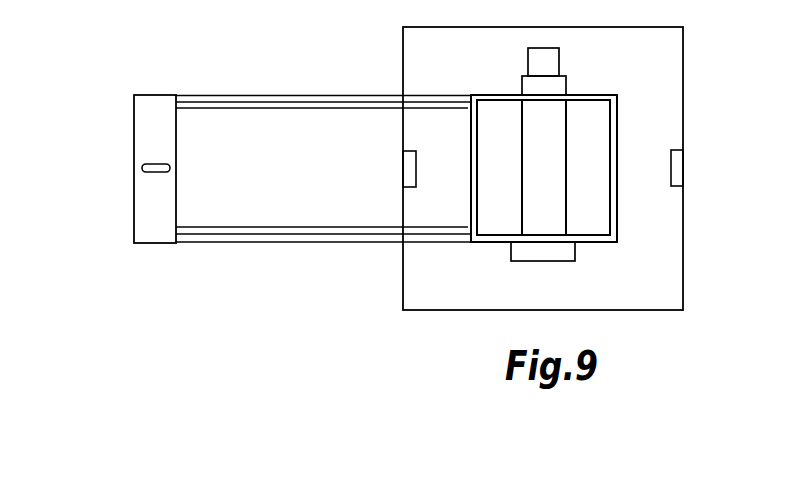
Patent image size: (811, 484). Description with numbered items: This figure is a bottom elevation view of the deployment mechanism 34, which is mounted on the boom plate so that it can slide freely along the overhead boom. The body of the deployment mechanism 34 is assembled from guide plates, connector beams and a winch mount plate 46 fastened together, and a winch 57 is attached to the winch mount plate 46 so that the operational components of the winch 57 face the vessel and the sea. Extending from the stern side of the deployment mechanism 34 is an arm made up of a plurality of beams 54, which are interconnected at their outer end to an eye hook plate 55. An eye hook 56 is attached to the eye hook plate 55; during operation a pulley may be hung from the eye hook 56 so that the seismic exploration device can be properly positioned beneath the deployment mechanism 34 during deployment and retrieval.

The deployment mechanism 34 is at (706, 66).
The winch mount plate 46 is at (667, 232).
The beams 54 is at (270, 95).
The eye hook plate 55 is at (134, 134).
The eye hook 56 is at (158, 172).
The winch 57 is at (605, 243).